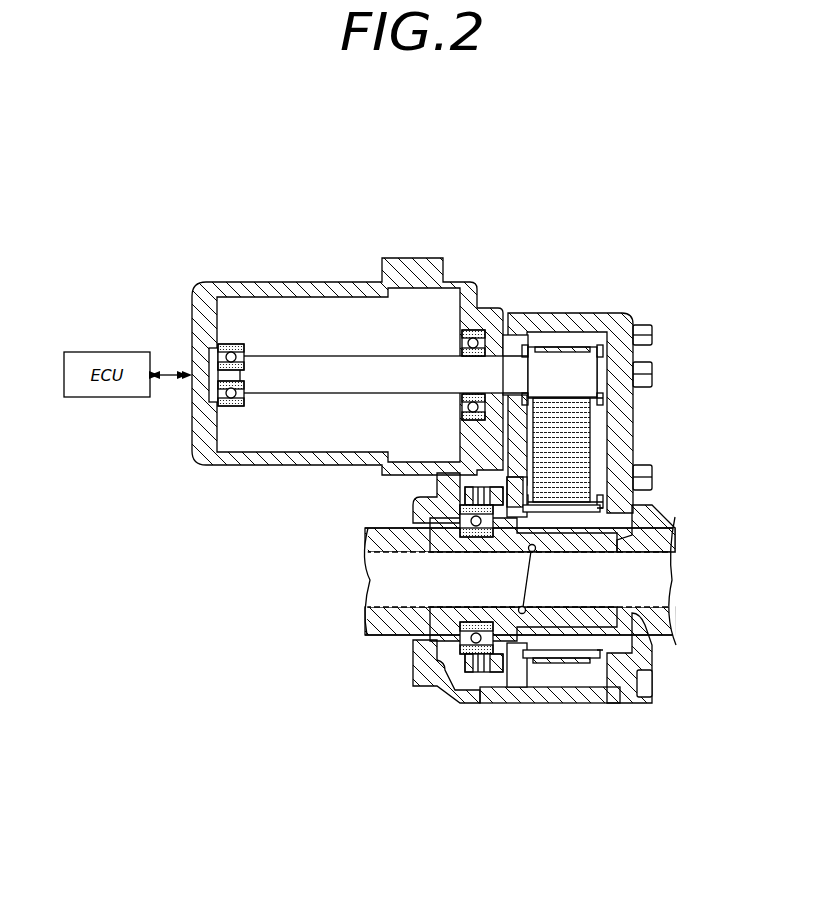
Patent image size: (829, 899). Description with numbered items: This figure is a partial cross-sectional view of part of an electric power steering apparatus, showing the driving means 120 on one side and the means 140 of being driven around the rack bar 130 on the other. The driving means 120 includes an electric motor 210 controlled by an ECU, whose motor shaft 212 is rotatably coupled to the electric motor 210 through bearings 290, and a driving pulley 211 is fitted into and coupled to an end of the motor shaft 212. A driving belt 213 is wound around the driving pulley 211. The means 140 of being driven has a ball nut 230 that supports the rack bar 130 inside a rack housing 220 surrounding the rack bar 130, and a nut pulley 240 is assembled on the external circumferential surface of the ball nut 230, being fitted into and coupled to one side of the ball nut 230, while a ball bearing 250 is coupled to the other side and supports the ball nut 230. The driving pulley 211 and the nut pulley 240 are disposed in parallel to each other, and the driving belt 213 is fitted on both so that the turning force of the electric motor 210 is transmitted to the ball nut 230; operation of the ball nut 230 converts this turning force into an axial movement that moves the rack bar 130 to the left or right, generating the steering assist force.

The driving means 120 is at (225, 268).
The rack bar 130 is at (657, 585).
The means of being driven 140 is at (639, 711).
The electric motor 210 is at (287, 282).
The driving pulley 211 is at (565, 363).
The motor shaft 212 is at (326, 365).
The driving belt 213 is at (590, 440).
The rack housing 220 is at (520, 698).
The ball nut 230 is at (637, 540).
The nut pulley 240 is at (568, 647).
The ball bearing 250 is at (476, 674).
The bearings 290 is at (224, 343).